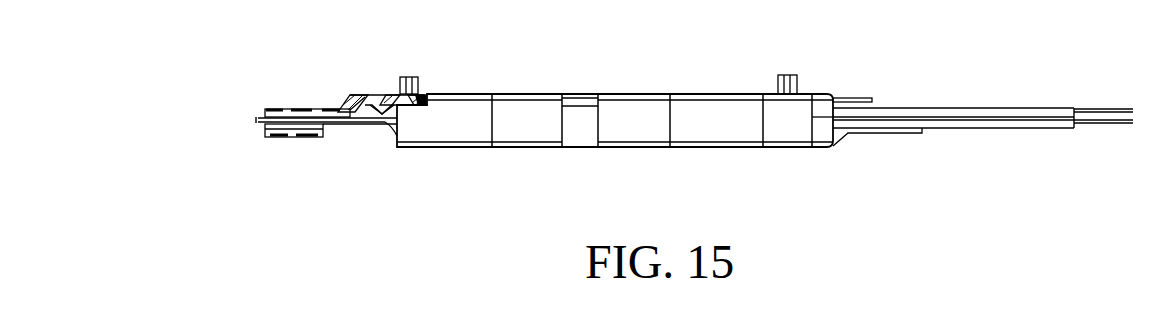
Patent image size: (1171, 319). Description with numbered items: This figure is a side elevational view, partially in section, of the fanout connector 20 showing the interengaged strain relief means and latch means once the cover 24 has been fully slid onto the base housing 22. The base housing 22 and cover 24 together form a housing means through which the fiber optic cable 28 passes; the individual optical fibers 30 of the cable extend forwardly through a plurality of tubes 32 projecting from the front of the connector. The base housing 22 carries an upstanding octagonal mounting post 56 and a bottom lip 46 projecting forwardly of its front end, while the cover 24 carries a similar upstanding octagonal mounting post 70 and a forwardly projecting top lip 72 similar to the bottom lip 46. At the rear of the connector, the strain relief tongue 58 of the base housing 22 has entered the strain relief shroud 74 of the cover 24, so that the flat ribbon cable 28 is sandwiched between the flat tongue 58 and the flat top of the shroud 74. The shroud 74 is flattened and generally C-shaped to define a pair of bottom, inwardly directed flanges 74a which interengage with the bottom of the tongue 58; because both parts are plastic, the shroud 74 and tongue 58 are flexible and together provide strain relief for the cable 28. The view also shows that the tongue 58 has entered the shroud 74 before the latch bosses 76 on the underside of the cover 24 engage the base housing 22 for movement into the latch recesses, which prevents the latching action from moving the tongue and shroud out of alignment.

The fanout connector 20 is at (590, 70).
The base housing 22 is at (445, 140).
The cover 24 is at (352, 100).
The fiber optic cable 28 is at (257, 123).
The optical fibers 30 is at (1106, 122).
The tubes 32 is at (1007, 124).
The bottom lip 46 is at (875, 134).
The mounting post 56 is at (787, 76).
The strain relief tongue 58 is at (350, 128).
The mounting post 70 is at (410, 88).
The top lip 72 is at (853, 98).
The strain relief shroud 74 is at (291, 113).
The flanges 74a is at (290, 135).
The latch bosses 76 is at (381, 112).